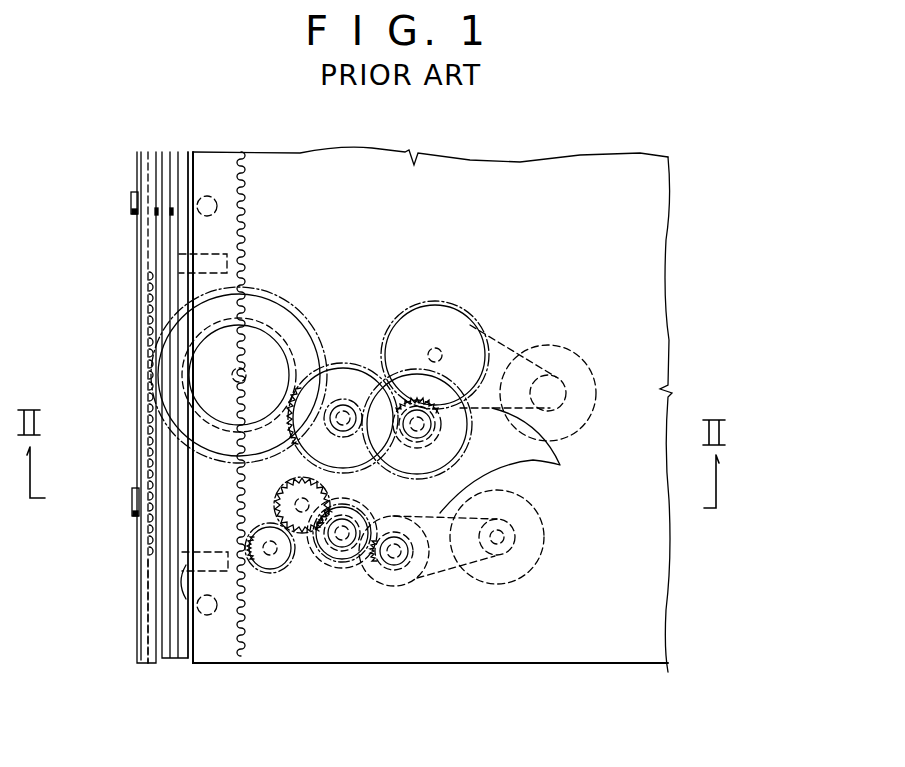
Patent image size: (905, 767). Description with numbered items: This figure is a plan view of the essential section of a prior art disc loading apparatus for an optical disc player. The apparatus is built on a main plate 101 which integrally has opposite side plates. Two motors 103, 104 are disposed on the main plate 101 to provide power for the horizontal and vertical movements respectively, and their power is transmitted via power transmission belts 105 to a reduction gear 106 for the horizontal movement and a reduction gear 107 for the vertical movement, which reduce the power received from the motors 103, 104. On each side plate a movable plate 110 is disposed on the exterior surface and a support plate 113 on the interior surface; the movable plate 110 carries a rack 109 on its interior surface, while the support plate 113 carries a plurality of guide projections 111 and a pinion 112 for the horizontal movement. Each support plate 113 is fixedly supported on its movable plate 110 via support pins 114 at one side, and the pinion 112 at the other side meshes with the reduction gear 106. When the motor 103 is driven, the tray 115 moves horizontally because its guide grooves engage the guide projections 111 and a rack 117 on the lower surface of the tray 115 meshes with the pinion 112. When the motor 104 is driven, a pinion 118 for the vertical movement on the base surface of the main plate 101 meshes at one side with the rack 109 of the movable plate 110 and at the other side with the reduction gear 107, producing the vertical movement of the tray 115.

The main plate 101 is at (162, 250).
The motor for the horizontal movement 103 is at (538, 555).
The motor for the vertical movement 104 is at (573, 352).
The power transmission belt 105 is at (576, 468).
The reduction gear for the horizontal movement 106 is at (377, 573).
The reduction gear for the vertical movement 107 is at (386, 382).
The rack 109 is at (148, 402).
The movable plate 110 is at (143, 295).
The guide projection 111 is at (150, 607).
The pinion for the horizontal movement 112 is at (272, 571).
The support plate 113 is at (170, 458).
The support pin 114 is at (132, 512).
The tray 115 is at (502, 640).
The rack 117 is at (244, 200).
The pinion for the vertical movement 118 is at (288, 292).